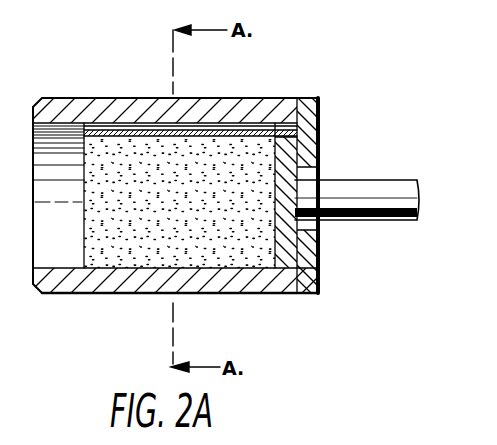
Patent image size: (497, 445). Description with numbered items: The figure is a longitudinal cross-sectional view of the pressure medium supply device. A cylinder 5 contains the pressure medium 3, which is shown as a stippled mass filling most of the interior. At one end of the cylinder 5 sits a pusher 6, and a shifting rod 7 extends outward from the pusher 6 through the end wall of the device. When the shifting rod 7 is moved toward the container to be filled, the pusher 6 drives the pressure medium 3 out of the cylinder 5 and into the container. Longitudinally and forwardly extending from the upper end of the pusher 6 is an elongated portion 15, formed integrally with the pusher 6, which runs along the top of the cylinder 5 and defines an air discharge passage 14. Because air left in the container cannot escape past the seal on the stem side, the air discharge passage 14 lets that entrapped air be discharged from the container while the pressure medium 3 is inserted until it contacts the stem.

The pressure medium 3 is at (229, 258).
The cylinder 5 is at (285, 110).
The pusher 6 is at (318, 137).
The shifting rod 7 is at (373, 197).
The air discharge passage 14 is at (107, 124).
The elongated portion 15 is at (228, 133).